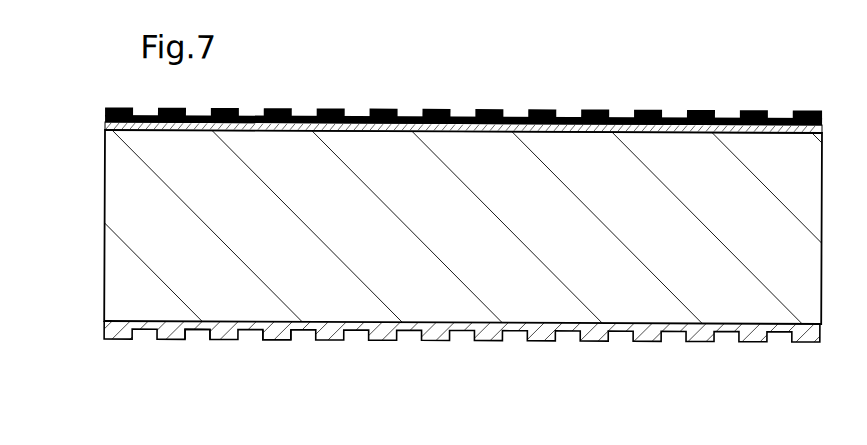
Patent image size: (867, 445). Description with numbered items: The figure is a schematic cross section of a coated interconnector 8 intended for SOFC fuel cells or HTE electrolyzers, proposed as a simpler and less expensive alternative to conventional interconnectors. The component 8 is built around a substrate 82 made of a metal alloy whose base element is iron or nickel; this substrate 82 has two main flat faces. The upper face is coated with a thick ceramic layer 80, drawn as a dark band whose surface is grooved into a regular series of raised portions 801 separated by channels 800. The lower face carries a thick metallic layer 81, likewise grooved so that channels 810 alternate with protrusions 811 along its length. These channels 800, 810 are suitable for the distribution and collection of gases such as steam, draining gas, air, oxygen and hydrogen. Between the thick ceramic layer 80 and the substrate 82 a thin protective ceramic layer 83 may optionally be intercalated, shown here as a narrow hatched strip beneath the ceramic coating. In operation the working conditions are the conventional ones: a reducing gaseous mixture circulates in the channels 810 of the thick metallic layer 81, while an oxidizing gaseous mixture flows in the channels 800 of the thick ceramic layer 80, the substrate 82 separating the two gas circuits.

The interconnector 8 is at (70, 221).
The thick ceramic layer 80 is at (542, 90).
The channels 800 is at (358, 115).
The electrode protrusion 801 is at (600, 107).
The thick metallic layer 81 is at (100, 332).
The channels 810 is at (195, 333).
The protrusion of second electrode layer 811 is at (277, 342).
The substrate 82 is at (125, 283).
The thin protective ceramic layer 83 is at (105, 127).